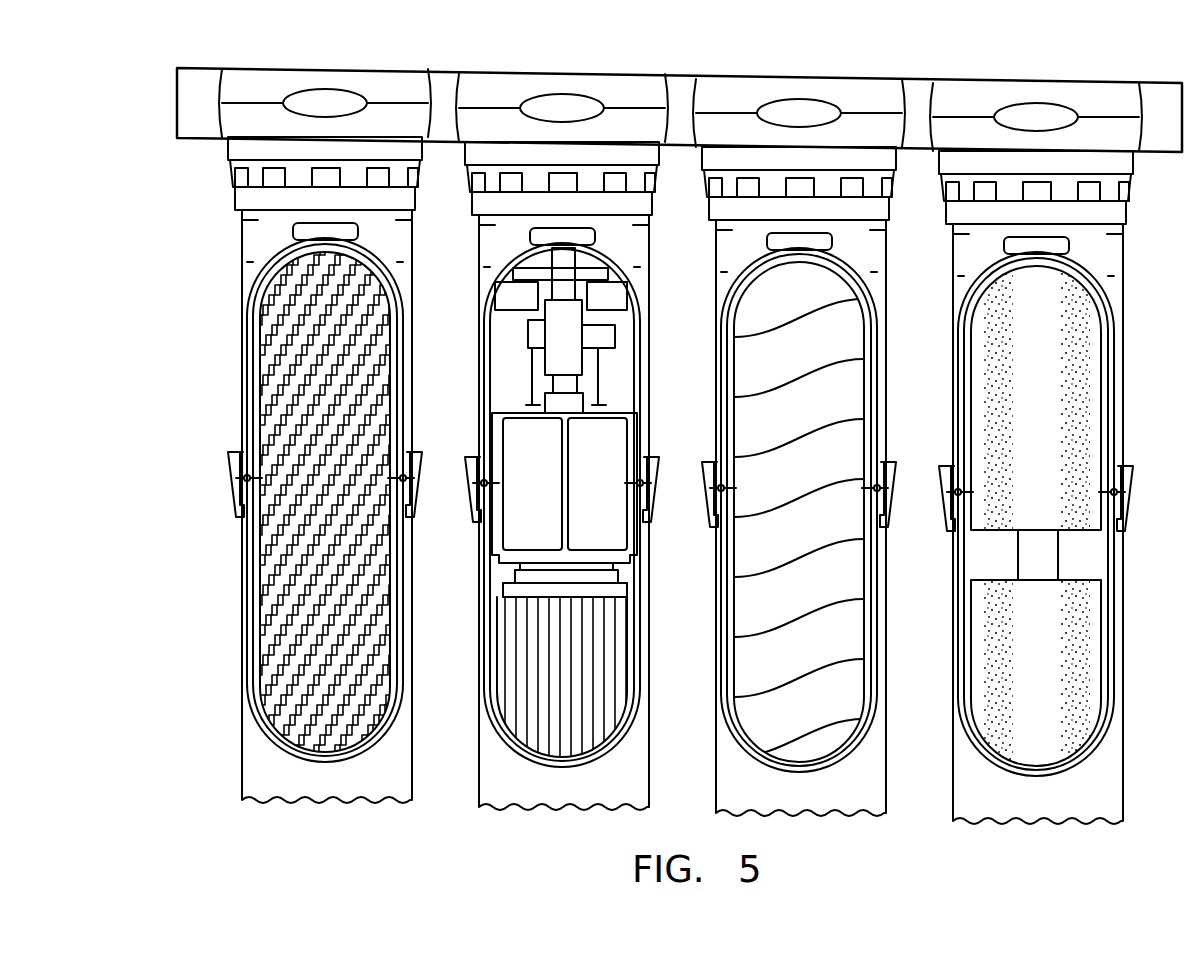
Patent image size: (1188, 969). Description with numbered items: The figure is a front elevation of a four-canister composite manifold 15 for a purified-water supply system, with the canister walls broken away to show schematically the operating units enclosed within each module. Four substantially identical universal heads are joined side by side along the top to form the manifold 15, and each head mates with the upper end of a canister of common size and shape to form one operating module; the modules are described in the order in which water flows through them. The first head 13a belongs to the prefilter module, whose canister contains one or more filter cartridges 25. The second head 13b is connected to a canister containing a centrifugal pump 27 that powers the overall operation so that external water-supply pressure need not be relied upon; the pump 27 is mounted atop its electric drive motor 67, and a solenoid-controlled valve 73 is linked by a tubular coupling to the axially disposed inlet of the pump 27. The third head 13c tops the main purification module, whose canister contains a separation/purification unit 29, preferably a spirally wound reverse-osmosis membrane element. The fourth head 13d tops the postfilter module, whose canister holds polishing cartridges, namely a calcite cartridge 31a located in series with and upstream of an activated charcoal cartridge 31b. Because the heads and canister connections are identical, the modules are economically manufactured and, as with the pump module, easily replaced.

The composite manifold 15 is at (164, 81).
The first head 13a is at (367, 93).
The second head 13b is at (605, 97).
The third head 13c is at (843, 100).
The fourth head 13d is at (1083, 104).
The filter cartridge 25 is at (320, 590).
The solenoid-controlled valve 73 is at (565, 342).
The centrifugal pump 27 is at (519, 488).
The electric drive motor 67 is at (555, 660).
The separation/purification unit 29 is at (786, 483).
The calcite cartridge 31a is at (1055, 647).
The activated charcoal cartridge 31b is at (1053, 393).